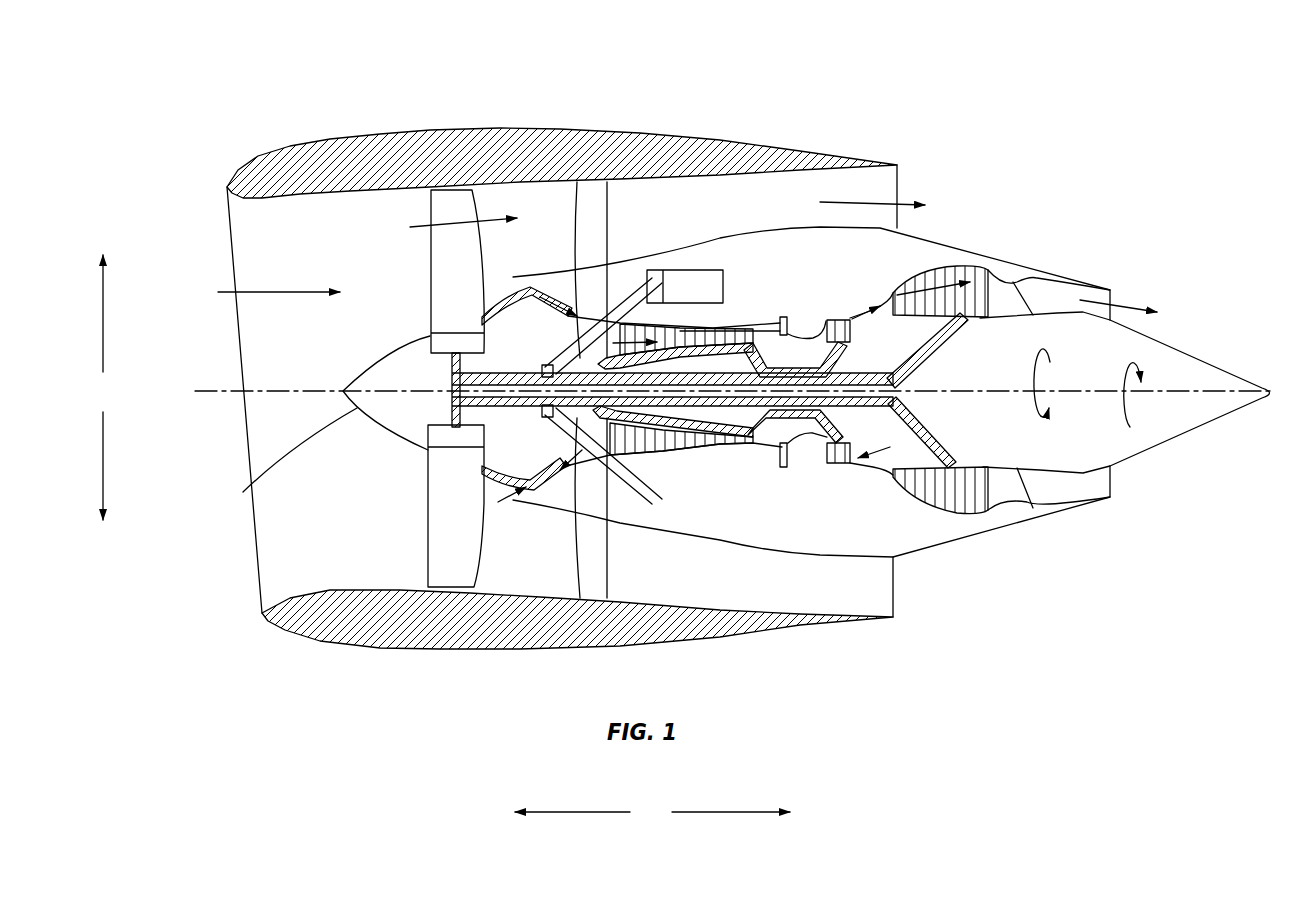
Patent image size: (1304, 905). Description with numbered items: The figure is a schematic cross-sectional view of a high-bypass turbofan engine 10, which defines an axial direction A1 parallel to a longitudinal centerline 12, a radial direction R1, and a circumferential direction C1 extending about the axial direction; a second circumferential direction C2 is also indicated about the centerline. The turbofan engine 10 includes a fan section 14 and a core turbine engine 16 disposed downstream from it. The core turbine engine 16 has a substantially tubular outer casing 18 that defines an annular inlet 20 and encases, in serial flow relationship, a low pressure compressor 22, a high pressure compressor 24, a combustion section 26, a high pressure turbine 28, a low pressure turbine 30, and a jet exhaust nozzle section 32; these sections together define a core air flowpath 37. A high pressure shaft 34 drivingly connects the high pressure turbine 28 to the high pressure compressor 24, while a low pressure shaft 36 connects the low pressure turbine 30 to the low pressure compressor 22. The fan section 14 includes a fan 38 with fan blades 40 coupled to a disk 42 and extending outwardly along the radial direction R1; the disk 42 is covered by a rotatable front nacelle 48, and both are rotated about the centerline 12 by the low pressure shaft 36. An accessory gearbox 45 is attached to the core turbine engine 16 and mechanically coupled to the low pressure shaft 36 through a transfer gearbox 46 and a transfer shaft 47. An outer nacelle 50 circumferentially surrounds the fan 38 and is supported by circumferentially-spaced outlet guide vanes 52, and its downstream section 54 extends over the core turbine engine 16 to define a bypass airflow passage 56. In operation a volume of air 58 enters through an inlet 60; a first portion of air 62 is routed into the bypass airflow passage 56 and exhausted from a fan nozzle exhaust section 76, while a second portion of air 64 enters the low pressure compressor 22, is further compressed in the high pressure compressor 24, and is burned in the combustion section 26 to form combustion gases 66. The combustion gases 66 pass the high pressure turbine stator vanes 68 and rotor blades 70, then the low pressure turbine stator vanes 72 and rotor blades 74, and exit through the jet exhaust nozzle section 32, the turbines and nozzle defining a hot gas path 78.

The turbofan engine 10 is at (1033, 140).
The longitudinal centerline 12 is at (1055, 388).
The fan section 14 is at (468, 102).
The core turbine engine 16 is at (772, 288).
The outer casing 18 is at (760, 548).
The annular inlet 20 is at (513, 500).
The low pressure compressor 22 is at (573, 450).
The high pressure compressor 24 is at (637, 446).
The combustion section 26 is at (798, 454).
The high pressure turbine 28 is at (860, 457).
The low pressure turbine 30 is at (977, 520).
The jet exhaust nozzle section 32 is at (1033, 500).
The high pressure shaft 34 is at (800, 350).
The low pressure shaft 36 is at (908, 364).
The core air flowpath 37 is at (598, 454).
The fan 38 is at (393, 437).
The fan blades 40 is at (427, 533).
The disk 42 is at (447, 347).
The accessory gearbox 45 is at (712, 270).
The transfer gearbox 46 is at (658, 268).
The transfer shaft 47 is at (585, 182).
The front nacelle 48 is at (245, 480).
The outer nacelle 50 is at (470, 650).
The outlet guide vanes 52 is at (608, 208).
The downstream section 54 is at (820, 153).
The bypass airflow passage 56 is at (727, 226).
The volume of air 58 is at (272, 290).
The inlet 60 is at (251, 600).
The first portion of air 62 is at (440, 217).
The second portion of air 64 is at (513, 277).
The combustion gases 66 is at (842, 313).
The HP turbine stator vanes 68 is at (813, 460).
The HP turbine rotor blades 70 is at (860, 435).
The LP turbine stator vanes 72 is at (905, 503).
The LP turbine rotor blades 74 is at (912, 505).
The fan nozzle exhaust section 76 is at (890, 190).
The hot gas path 78 is at (885, 298).
The circumferential direction C1 is at (1046, 428).
The rotation direction C2 is at (1131, 427).
The radial direction R1 is at (101, 387).
The axial direction A1 is at (652, 817).